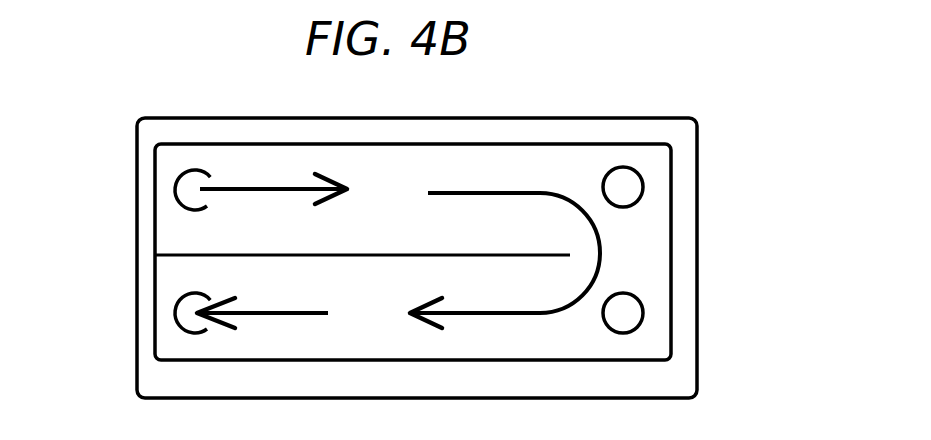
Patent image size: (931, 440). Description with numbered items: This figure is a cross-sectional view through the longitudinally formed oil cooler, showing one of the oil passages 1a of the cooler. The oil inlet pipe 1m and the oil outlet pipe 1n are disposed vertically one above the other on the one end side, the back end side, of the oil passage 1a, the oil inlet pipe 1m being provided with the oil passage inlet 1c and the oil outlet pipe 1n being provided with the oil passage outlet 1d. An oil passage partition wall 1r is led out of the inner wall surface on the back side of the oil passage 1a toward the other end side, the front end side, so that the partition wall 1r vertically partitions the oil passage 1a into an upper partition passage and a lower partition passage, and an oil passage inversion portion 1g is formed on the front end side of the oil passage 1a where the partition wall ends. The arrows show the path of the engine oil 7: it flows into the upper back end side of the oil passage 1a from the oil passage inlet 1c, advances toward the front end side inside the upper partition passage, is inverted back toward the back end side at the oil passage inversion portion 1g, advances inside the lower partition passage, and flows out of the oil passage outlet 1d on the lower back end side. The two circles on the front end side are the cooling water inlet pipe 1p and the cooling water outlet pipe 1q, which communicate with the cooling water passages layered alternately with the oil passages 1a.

The oil passage 1a is at (387, 193).
The oil passage inlet 1c is at (210, 200).
The oil passage outlet 1d is at (208, 327).
The oil passage inversion portion 1g is at (648, 248).
The oil inlet pipe 1m is at (177, 192).
The oil outlet pipe 1n is at (175, 315).
The cooling water inlet pipe 1p is at (647, 322).
The cooling water outlet pipe 1q is at (645, 185).
The oil passage partition wall 1r is at (385, 253).
The engine oil 7 is at (333, 198).